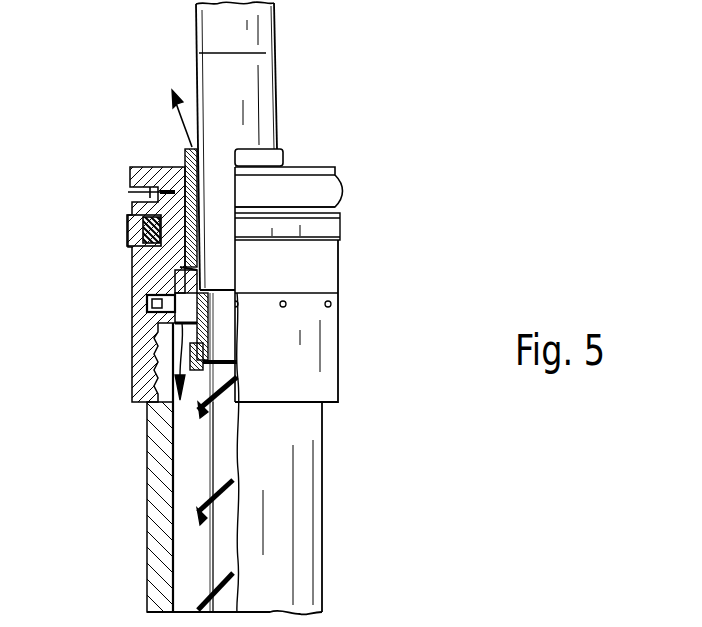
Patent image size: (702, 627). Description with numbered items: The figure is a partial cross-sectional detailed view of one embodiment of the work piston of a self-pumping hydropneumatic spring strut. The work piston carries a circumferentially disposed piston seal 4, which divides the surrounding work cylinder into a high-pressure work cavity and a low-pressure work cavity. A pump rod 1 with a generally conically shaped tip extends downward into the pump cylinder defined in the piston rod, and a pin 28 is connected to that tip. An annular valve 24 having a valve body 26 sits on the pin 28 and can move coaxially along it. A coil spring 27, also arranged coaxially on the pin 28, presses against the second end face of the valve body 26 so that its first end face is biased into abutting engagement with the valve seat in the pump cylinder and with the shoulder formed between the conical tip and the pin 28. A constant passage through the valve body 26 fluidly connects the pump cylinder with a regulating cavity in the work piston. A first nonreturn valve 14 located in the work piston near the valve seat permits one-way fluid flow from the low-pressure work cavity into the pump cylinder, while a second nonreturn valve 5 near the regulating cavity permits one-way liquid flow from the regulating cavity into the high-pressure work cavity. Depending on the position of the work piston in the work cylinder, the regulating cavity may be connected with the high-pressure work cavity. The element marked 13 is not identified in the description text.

The pump rod 1 is at (263, 30).
The piston seal 4 is at (130, 228).
The second nonreturn valve 5 is at (128, 192).
The clamping element 13 is at (185, 290).
The first nonreturn valve 14 is at (150, 320).
The annular valve 24 is at (190, 362).
The valve body 26 is at (175, 318).
The coil spring 27 is at (200, 512).
The pin 28 is at (223, 537).